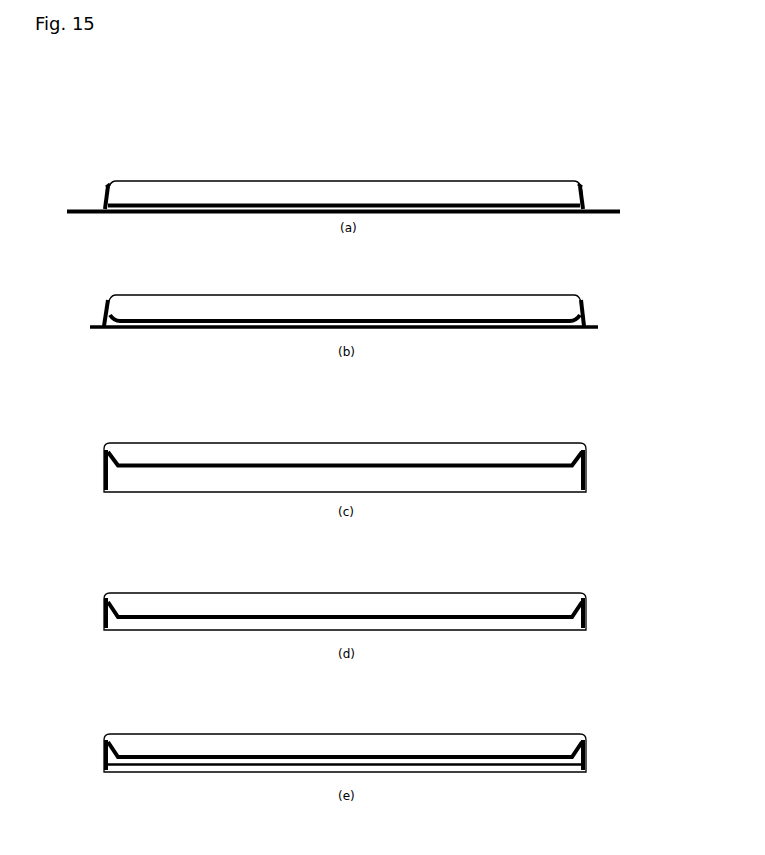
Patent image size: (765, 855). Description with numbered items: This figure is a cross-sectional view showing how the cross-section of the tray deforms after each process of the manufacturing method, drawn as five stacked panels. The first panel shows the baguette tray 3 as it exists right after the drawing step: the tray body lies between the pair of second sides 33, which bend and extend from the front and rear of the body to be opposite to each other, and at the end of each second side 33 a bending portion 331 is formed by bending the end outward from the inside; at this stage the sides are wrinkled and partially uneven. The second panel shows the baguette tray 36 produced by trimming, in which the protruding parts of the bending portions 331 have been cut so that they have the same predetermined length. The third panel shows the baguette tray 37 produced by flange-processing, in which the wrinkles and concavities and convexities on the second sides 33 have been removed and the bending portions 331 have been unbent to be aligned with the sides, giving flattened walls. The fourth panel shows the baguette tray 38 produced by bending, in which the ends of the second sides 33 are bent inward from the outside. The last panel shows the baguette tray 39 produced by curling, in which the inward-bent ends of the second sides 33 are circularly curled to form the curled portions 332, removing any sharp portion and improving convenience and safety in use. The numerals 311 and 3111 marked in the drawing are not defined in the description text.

The baguette tray 3 is at (321, 143).
The film layer 311 is at (190, 206).
The film edge portion 3111 is at (108, 190).
The second side 33 is at (100, 200).
The bending portion 331 is at (72, 215).
The curled portion 332 is at (102, 770).
The baguette tray 36 is at (246, 290).
The baguette tray 37 is at (242, 418).
The baguette tray 38 is at (243, 584).
The baguette tray 39 is at (236, 722).